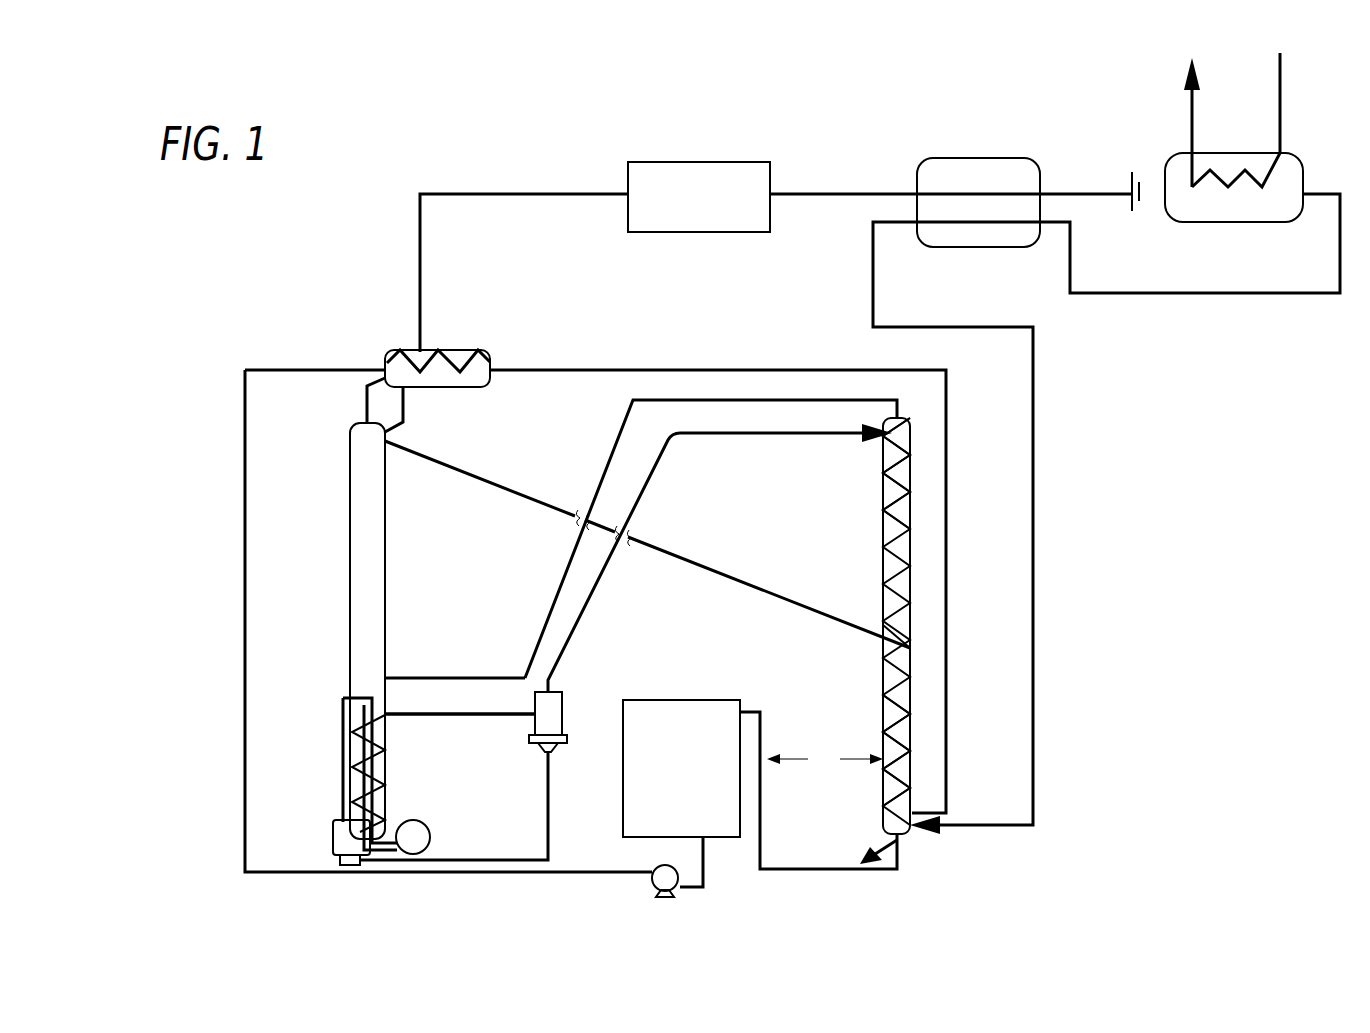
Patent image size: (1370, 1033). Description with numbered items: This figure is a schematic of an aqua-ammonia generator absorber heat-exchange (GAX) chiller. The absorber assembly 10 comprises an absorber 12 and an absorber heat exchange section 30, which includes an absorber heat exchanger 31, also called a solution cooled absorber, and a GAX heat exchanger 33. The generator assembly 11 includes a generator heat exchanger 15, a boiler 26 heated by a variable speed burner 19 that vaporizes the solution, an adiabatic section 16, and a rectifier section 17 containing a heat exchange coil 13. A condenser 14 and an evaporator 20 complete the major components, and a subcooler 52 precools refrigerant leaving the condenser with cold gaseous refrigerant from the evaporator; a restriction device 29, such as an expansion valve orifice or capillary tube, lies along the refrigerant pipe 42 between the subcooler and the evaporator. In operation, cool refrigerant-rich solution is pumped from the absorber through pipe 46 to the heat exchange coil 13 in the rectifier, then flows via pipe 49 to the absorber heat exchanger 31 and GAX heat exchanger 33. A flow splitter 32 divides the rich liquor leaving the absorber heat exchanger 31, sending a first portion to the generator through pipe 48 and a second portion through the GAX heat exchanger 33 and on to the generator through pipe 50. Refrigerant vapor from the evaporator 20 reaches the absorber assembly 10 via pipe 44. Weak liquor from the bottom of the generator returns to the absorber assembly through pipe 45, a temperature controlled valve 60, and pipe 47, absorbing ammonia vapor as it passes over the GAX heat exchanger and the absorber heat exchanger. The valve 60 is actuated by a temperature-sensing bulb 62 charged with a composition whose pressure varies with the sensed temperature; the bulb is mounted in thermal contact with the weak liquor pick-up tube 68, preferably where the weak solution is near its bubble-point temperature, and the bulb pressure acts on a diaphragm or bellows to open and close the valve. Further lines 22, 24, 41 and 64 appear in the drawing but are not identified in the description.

The absorber assembly 10 is at (825, 759).
The generator assembly 11 is at (388, 548).
The absorber 12 is at (700, 700).
The heat exchange coil 13 is at (452, 352).
The condenser 14 is at (720, 162).
The generator heat exchanger 15 is at (380, 752).
The adiabatic section 16 is at (350, 488).
The rectifier section 17 is at (386, 352).
The variable speed burner 19 is at (430, 824).
The evaporator 20 is at (1240, 222).
The inlet line 22 is at (1282, 90).
The outlet line 24 is at (1191, 113).
The boiler 26 is at (348, 748).
The restriction device 29 is at (1129, 172).
The absorber heat exchange section 30 is at (883, 562).
The absorber heat exchanger 31 is at (890, 706).
The flow splitter 32 is at (874, 622).
The GAX heat exchanger 33 is at (884, 512).
The refrigerant vapor line 41 is at (482, 194).
The refrigerant pipe 42 is at (818, 193).
The pipe 44 is at (1215, 294).
The pipe 45 is at (457, 718).
The pipe 46 is at (495, 874).
The pipe 47 is at (648, 498).
The pipe 48 is at (722, 572).
The pipe 49 is at (710, 370).
The pipe 50 is at (556, 606).
The subcooler 52 is at (978, 158).
The temperature controlled valve 60 is at (565, 710).
The temperature-sensing bulb 62 is at (350, 868).
The valve outlet line 64 is at (549, 800).
The weak liquor pick-up tube 68 is at (333, 840).